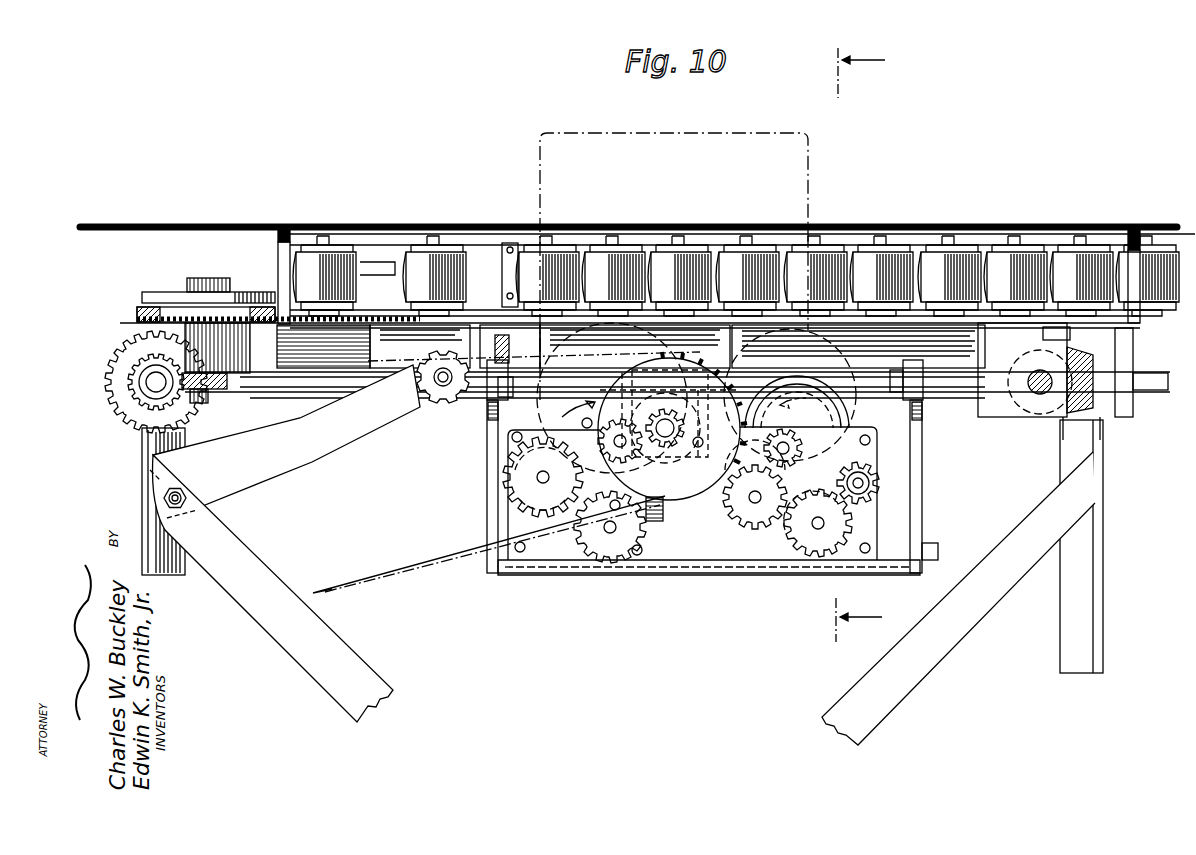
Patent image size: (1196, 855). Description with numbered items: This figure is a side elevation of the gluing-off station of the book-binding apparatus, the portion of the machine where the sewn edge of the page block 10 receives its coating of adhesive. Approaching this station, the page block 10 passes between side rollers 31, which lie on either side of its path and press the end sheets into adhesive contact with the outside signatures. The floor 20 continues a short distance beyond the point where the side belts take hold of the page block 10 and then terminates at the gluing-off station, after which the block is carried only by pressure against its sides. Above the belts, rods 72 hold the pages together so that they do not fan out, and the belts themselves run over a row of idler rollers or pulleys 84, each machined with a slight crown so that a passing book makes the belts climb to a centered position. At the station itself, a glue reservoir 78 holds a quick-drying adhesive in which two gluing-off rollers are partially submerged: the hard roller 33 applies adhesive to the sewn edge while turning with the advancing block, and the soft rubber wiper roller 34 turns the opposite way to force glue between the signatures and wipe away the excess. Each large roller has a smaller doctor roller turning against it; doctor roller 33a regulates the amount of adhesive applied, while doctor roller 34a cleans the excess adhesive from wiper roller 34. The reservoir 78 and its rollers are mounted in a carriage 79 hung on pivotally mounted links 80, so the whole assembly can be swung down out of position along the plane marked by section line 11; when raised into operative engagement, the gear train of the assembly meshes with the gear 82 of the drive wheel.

The page block 10 is at (754, 166).
The section line 11 is at (860, 337).
The floor 20 is at (396, 313).
The side rollers 31 is at (158, 292).
The gluing-off roller 33 is at (580, 418).
The doctor roller 33a is at (505, 466).
The wiper roller 34 is at (822, 437).
The doctor roller 34a is at (895, 470).
The rods 72 is at (239, 223).
The glue reservoir 78 is at (578, 548).
The carriage 79 is at (503, 568).
The links 80 is at (487, 490).
The gear 82 is at (665, 441).
The idler rollers or pulleys 84 is at (734, 276).